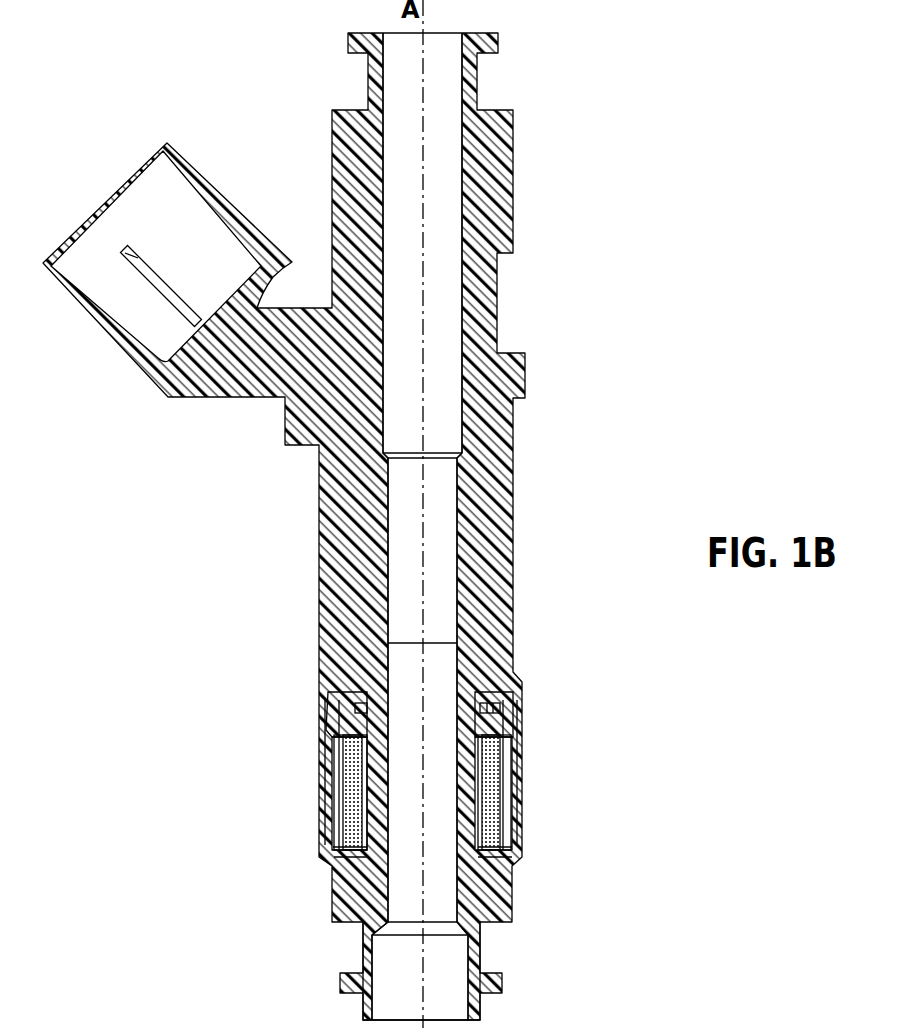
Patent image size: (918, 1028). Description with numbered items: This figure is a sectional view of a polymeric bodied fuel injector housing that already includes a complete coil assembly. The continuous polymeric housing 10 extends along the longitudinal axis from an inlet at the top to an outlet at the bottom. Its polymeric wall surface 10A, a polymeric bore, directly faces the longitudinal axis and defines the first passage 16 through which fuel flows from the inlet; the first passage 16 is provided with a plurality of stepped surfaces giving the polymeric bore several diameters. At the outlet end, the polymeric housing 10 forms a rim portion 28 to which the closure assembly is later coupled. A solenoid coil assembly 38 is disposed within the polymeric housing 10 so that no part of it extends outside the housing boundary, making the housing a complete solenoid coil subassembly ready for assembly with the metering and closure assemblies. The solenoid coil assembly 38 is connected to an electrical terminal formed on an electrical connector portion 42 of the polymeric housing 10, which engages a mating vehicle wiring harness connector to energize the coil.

The polymeric housing 10 is at (522, 122).
The polymeric wall surface 10A is at (476, 966).
The first passage 16 is at (402, 220).
The rim portion 28 is at (363, 1012).
The solenoid coil assembly 38 is at (315, 832).
The electrical connector portion 42 is at (221, 383).